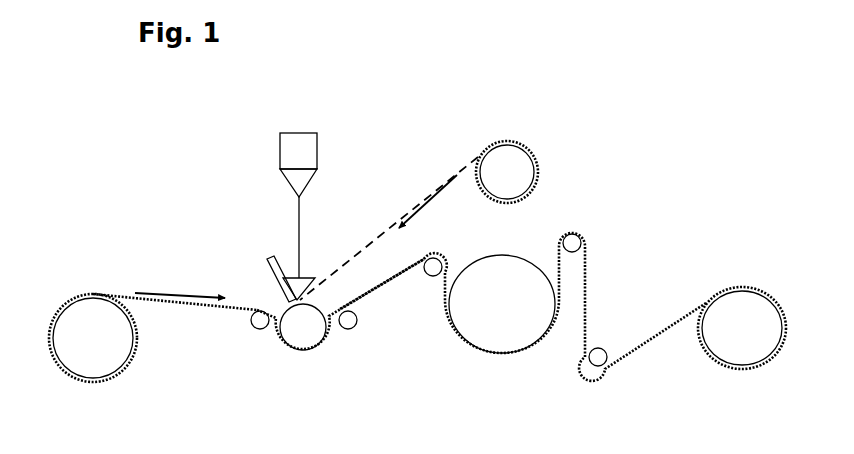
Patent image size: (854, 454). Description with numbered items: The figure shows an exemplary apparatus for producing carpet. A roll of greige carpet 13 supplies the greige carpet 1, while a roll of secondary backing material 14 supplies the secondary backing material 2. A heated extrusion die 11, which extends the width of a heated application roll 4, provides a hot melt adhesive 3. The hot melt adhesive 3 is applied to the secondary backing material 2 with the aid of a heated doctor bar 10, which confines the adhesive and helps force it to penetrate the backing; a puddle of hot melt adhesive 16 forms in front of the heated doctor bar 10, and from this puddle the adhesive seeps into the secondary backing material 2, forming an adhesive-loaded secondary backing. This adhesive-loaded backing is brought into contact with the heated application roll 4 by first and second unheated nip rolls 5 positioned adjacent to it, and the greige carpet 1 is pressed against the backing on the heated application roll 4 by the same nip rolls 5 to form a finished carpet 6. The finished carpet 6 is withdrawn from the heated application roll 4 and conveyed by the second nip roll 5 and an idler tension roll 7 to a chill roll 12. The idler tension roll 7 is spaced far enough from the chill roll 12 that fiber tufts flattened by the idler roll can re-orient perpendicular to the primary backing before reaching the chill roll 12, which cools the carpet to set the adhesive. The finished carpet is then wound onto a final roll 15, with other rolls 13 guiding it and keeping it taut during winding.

The greige carpet 1 is at (168, 311).
The secondary backing material 2 is at (415, 195).
The hot melt adhesive 3 is at (306, 208).
The heated application roll 4 is at (321, 303).
The first and second unheated nip rolls 5 is at (254, 331).
The finished carpet 6 is at (393, 285).
The idler tension roll 7 is at (432, 282).
The heated doctor bar 10 is at (264, 272).
The heated extrusion die 11 is at (299, 121).
The chill roll 12 is at (505, 253).
The roll of greige carpet / guide rolls 13 is at (113, 383).
The roll of secondary backing material 14 is at (534, 148).
The final roll 15 is at (733, 377).
The puddle of hot melt adhesive 16 is at (310, 271).